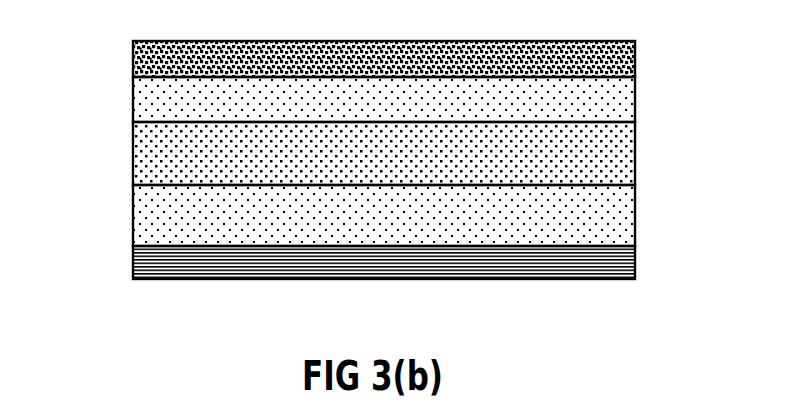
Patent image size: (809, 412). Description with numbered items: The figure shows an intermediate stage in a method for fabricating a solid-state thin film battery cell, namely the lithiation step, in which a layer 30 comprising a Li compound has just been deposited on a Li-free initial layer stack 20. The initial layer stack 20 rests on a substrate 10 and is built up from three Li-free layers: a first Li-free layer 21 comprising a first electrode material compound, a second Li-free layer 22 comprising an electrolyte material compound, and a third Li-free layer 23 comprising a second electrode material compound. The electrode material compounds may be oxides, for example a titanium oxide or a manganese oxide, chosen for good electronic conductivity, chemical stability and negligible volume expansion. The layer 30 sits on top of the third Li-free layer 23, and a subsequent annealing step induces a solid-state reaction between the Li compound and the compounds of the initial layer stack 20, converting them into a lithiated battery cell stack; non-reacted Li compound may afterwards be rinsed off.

The substrate 10 is at (635, 265).
The initial layer stack 20 is at (128, 80).
The first Li-free layer 21 is at (635, 217).
The second Li-free layer 22 is at (635, 153).
The third Li-free layer 23 is at (635, 100).
The layer comprising a Li compound 30 is at (635, 60).